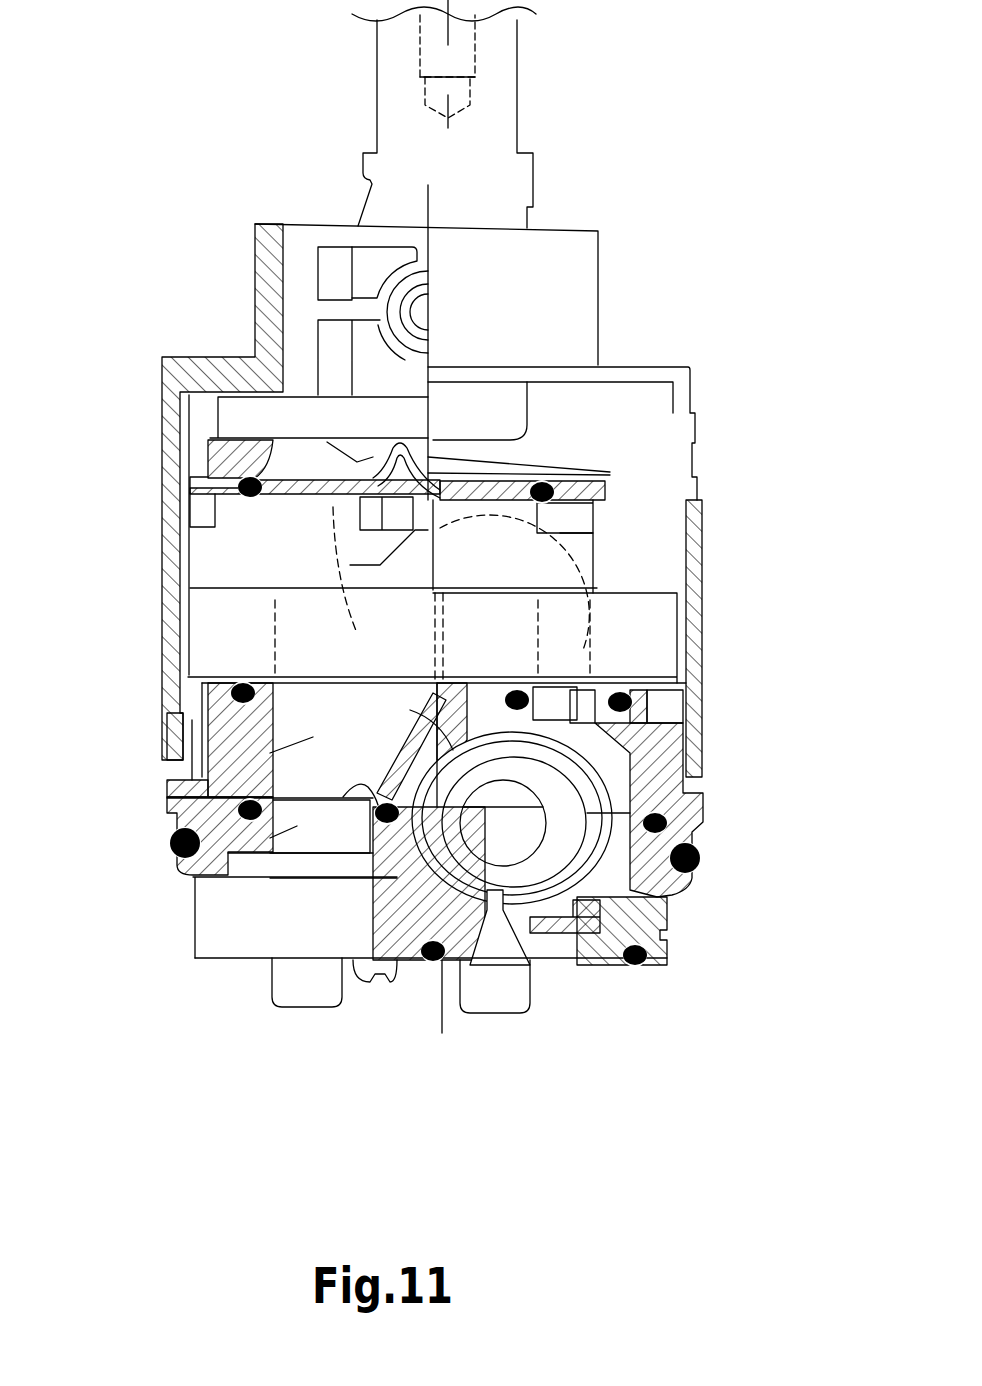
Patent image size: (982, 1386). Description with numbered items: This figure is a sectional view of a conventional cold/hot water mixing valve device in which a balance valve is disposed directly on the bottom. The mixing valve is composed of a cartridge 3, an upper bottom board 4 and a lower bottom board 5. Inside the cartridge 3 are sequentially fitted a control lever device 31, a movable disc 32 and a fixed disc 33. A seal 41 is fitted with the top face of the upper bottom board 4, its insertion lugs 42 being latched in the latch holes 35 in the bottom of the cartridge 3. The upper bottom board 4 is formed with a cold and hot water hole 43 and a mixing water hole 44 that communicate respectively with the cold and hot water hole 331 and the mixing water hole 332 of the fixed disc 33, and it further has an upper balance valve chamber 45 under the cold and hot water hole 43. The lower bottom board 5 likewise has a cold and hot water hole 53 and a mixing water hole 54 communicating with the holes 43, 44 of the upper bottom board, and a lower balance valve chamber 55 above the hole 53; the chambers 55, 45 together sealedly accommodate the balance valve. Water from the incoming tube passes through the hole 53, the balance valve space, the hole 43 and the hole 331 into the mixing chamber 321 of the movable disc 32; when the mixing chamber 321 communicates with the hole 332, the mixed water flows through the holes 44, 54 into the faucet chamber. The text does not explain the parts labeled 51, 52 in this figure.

The control lever device 31 is at (383, 422).
The movable disc 32 is at (510, 517).
The mixing chamber 321 is at (627, 497).
The cartridge 3 is at (702, 550).
The mixing water hole 332 is at (355, 630).
The fixed disc 33 is at (627, 632).
The cold and hot water hole 331 is at (831, 644).
The upper bottom board 4 is at (597, 753).
The seal 41 is at (243, 680).
The latch holes 35 is at (170, 723).
The insertion lugs 42 is at (175, 733).
The mixing water hole 44 is at (175, 837).
The upper balance valve chamber 45 is at (430, 707).
The cold and hot water hole 43 is at (697, 825).
The lower bottom board 5 is at (670, 910).
The mixing water hole 54 is at (197, 910).
The base wall 51 is at (343, 797).
The lower balance valve chamber 55 is at (395, 895).
The centre stem 52 is at (393, 973).
The cold and hot water hole 53 is at (507, 927).